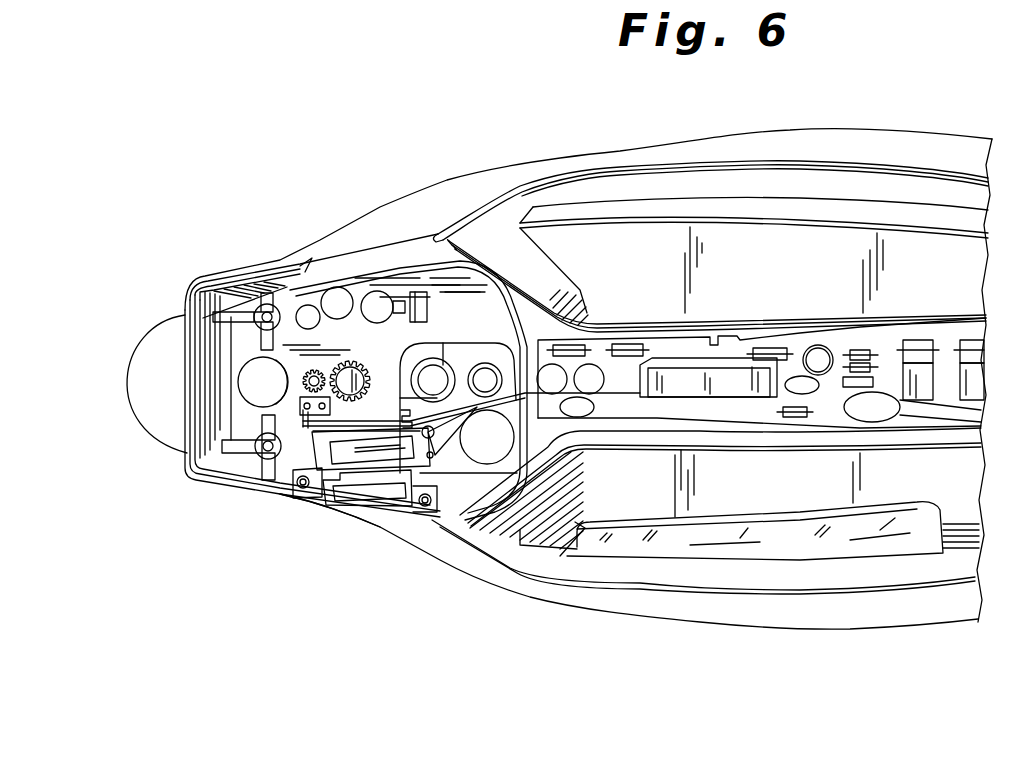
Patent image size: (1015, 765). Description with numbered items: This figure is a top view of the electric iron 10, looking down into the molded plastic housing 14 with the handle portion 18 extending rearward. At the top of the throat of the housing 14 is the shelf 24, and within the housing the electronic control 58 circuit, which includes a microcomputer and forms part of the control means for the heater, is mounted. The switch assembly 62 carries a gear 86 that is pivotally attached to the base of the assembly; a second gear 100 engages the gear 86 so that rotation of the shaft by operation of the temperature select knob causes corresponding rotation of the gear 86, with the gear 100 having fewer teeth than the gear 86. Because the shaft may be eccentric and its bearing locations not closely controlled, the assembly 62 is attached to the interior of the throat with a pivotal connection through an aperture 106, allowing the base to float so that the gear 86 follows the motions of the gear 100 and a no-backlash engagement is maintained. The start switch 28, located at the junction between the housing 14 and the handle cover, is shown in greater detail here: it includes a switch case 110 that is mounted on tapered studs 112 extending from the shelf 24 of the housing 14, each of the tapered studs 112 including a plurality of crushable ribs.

The electric iron 10 is at (345, 128).
The housing 14 is at (785, 145).
The handle portion 18 is at (633, 318).
The shelf 24 is at (222, 341).
The start switch 28 is at (342, 483).
The electronic control circuit 58 is at (750, 343).
The switch assembly 62 is at (305, 404).
The gear 86 is at (343, 365).
The second gear 100 is at (307, 370).
The aperture 106 is at (376, 477).
The switch case 110 is at (463, 520).
The tapered studs 112 is at (299, 489).